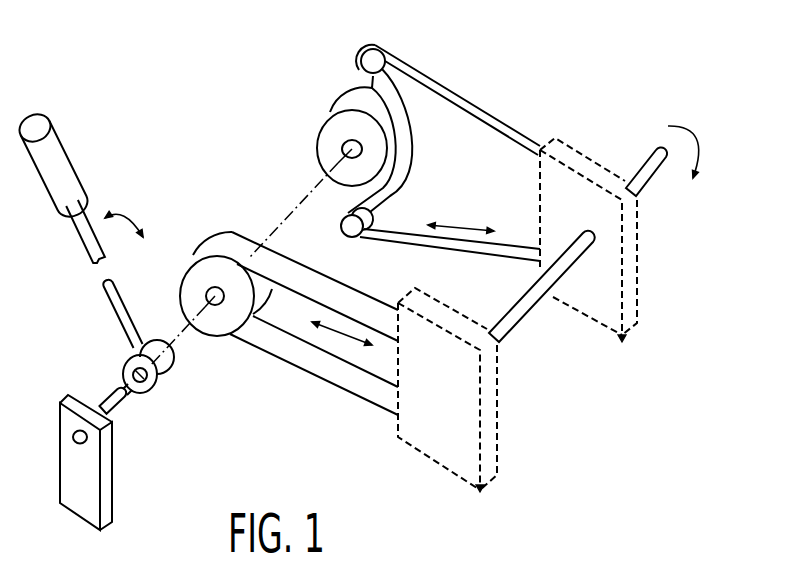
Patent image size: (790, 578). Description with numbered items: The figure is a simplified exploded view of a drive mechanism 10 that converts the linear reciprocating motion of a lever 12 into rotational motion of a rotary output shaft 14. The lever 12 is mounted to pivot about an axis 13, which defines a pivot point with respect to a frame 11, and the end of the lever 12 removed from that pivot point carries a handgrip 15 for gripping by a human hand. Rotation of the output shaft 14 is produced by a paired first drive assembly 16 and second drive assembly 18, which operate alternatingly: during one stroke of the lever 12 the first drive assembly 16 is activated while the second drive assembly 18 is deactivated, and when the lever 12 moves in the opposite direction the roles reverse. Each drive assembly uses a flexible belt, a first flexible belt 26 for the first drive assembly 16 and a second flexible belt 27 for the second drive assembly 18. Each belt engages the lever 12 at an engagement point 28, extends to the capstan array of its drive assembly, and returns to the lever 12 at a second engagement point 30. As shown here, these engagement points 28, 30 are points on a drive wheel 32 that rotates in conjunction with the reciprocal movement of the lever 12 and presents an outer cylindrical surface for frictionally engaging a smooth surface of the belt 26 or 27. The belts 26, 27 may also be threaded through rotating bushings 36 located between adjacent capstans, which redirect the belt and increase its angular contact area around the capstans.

The drive mechanism 10 is at (163, 101).
The frame 11 is at (75, 470).
The lever 12 is at (87, 233).
The axis 13 is at (126, 395).
The rotary output shaft 14 is at (645, 170).
The handgrip 15 is at (58, 164).
The first drive assembly 16 is at (533, 440).
The second drive assembly 18 is at (660, 289).
The first flexible belt 26 is at (342, 370).
The second flexible belt 27 is at (467, 106).
The engagement point 28 is at (233, 222).
The second engagement point 30 is at (207, 346).
The drive wheel 32 is at (193, 293).
The rotating bushings 36 is at (368, 63).